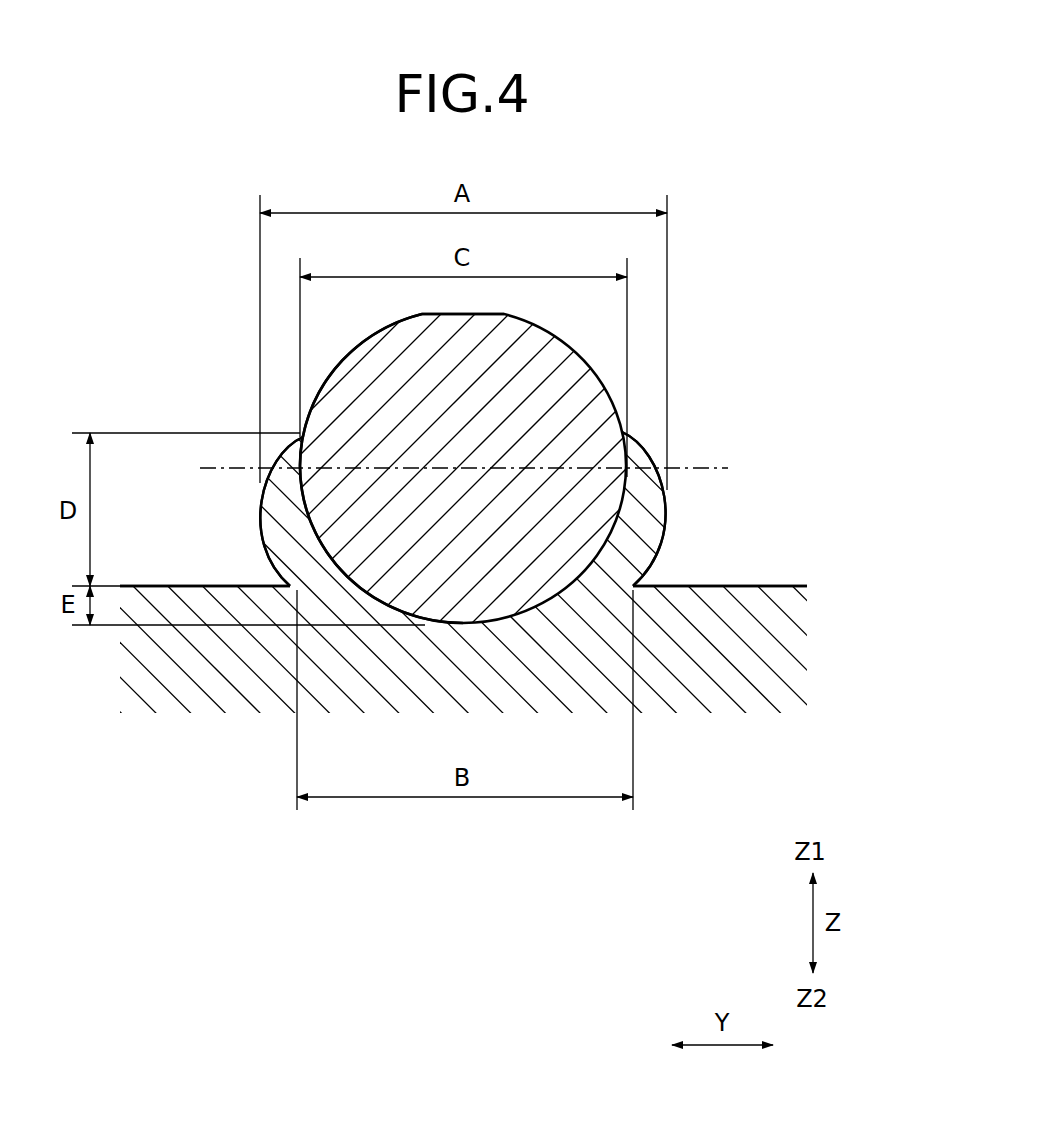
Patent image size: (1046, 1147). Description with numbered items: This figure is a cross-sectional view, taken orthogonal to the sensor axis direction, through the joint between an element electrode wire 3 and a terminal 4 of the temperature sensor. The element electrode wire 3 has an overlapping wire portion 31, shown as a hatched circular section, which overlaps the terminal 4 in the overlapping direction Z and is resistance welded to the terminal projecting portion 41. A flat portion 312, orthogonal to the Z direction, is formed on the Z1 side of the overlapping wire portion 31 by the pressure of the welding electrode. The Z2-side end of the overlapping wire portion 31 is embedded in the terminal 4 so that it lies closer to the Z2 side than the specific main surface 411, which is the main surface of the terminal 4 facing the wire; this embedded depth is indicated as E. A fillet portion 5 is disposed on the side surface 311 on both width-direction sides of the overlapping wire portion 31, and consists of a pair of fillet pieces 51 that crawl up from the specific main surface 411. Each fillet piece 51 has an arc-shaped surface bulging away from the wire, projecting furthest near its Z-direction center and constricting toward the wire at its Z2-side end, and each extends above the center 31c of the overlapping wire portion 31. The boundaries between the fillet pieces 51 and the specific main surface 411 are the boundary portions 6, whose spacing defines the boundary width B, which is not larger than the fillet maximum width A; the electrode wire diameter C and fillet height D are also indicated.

The element electrode wire 3 is at (570, 367).
The overlapping wire portion 31 is at (353, 383).
The side surface 311 is at (267, 502).
The flat portion 312 is at (488, 314).
The center 31c is at (678, 468).
The terminal 4 is at (753, 663).
The terminal projecting portion 41 is at (682, 667).
The specific main surface 411 is at (745, 583).
The fillet portion 5 is at (637, 532).
The fillet piece 51 is at (290, 550).
The boundary portion 6 is at (292, 588).